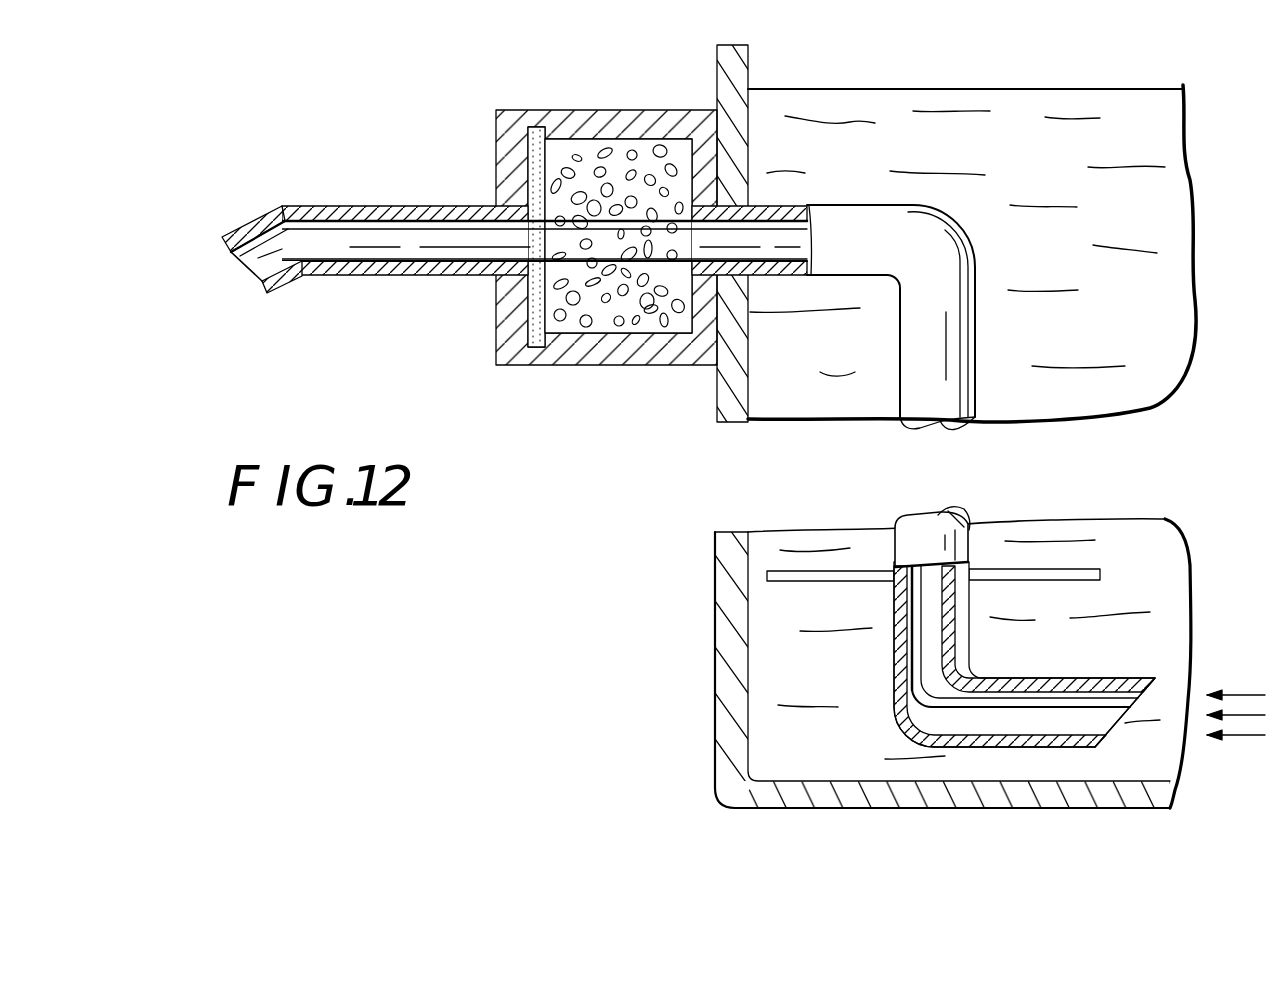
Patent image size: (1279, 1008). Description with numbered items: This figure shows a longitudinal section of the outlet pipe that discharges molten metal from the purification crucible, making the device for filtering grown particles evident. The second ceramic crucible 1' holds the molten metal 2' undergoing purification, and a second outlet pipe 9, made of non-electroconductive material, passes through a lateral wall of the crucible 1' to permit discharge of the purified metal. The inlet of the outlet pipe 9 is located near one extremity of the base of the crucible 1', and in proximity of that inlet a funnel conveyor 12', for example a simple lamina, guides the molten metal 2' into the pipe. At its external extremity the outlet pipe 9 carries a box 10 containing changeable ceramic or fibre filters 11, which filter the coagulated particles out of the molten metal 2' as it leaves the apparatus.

The ceramic crucible 1' is at (990, 668).
The molten metal 2' is at (972, 229).
The second outlet pipe 9 is at (358, 250).
The box 10 is at (582, 120).
The ceramic or fibre filters 11 is at (530, 180).
The funnel conveyor 12' is at (945, 586).